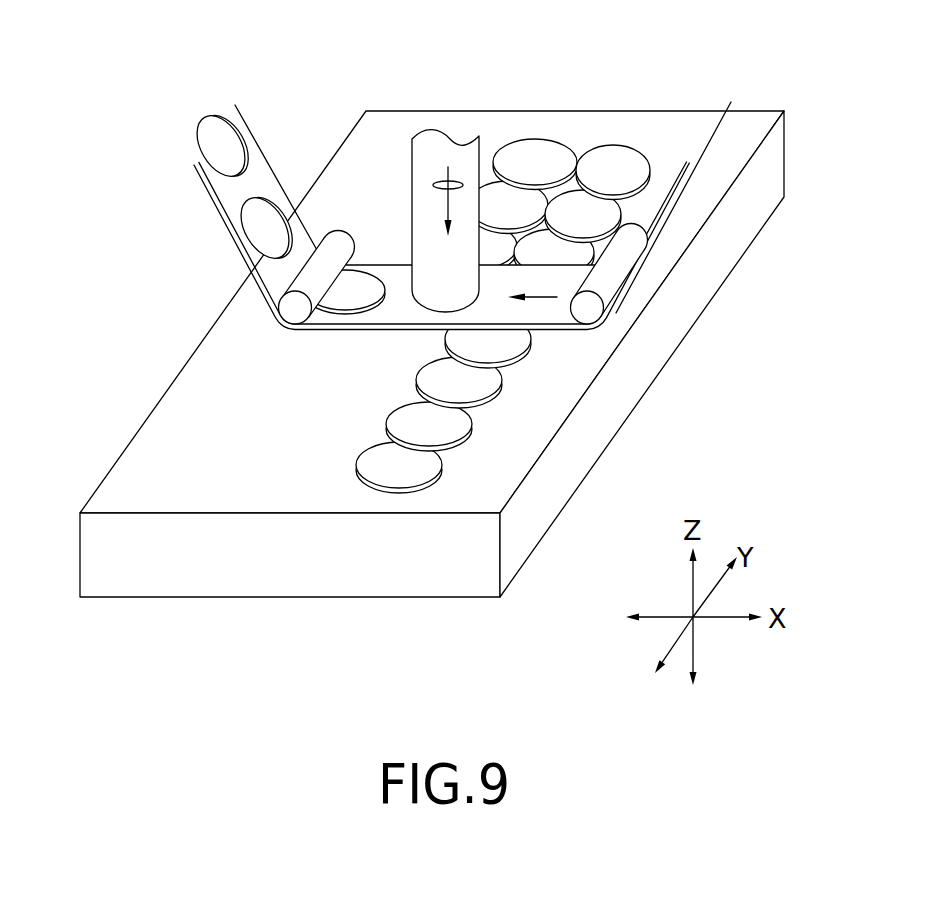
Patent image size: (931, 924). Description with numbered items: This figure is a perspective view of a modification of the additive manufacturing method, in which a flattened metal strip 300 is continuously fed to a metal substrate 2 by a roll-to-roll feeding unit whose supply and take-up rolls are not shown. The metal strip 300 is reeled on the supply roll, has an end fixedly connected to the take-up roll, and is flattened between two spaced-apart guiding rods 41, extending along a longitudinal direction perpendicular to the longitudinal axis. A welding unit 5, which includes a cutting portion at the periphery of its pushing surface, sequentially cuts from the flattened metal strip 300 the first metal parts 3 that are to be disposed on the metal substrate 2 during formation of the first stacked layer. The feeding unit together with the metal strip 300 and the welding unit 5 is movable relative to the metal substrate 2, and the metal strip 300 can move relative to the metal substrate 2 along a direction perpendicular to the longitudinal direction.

The metal substrate 2 is at (678, 92).
The first metal parts 3 is at (610, 128).
The welding unit 5 is at (405, 155).
The guiding rods 41 is at (287, 309).
The metal strip 300 is at (553, 319).